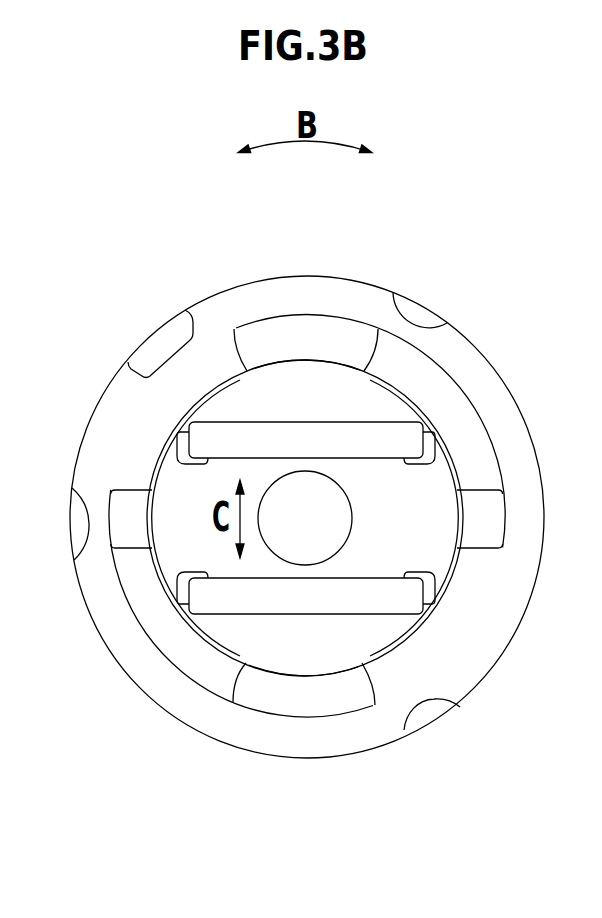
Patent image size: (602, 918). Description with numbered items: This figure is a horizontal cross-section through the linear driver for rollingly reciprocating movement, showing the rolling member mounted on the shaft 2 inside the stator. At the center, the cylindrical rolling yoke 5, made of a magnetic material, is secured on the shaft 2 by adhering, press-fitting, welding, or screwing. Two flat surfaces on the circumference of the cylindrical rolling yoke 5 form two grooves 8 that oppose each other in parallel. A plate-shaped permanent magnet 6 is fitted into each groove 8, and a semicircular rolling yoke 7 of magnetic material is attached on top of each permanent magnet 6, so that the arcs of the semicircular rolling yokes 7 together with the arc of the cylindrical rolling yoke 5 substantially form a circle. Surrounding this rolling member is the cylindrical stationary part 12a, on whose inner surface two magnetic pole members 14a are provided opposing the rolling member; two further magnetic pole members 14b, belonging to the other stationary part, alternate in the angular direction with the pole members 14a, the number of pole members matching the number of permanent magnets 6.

The shaft 2 is at (328, 525).
The cylindrical rolling yoke 5 is at (428, 500).
The plate-shaped permanent magnet 6 is at (344, 436).
The semicircular rolling yoke 7 is at (300, 385).
The groove 8 is at (380, 457).
The cylindrical stationary part 12a is at (400, 710).
The magnetic pole member 14a is at (167, 413).
The magnetic pole member 14b is at (440, 397).